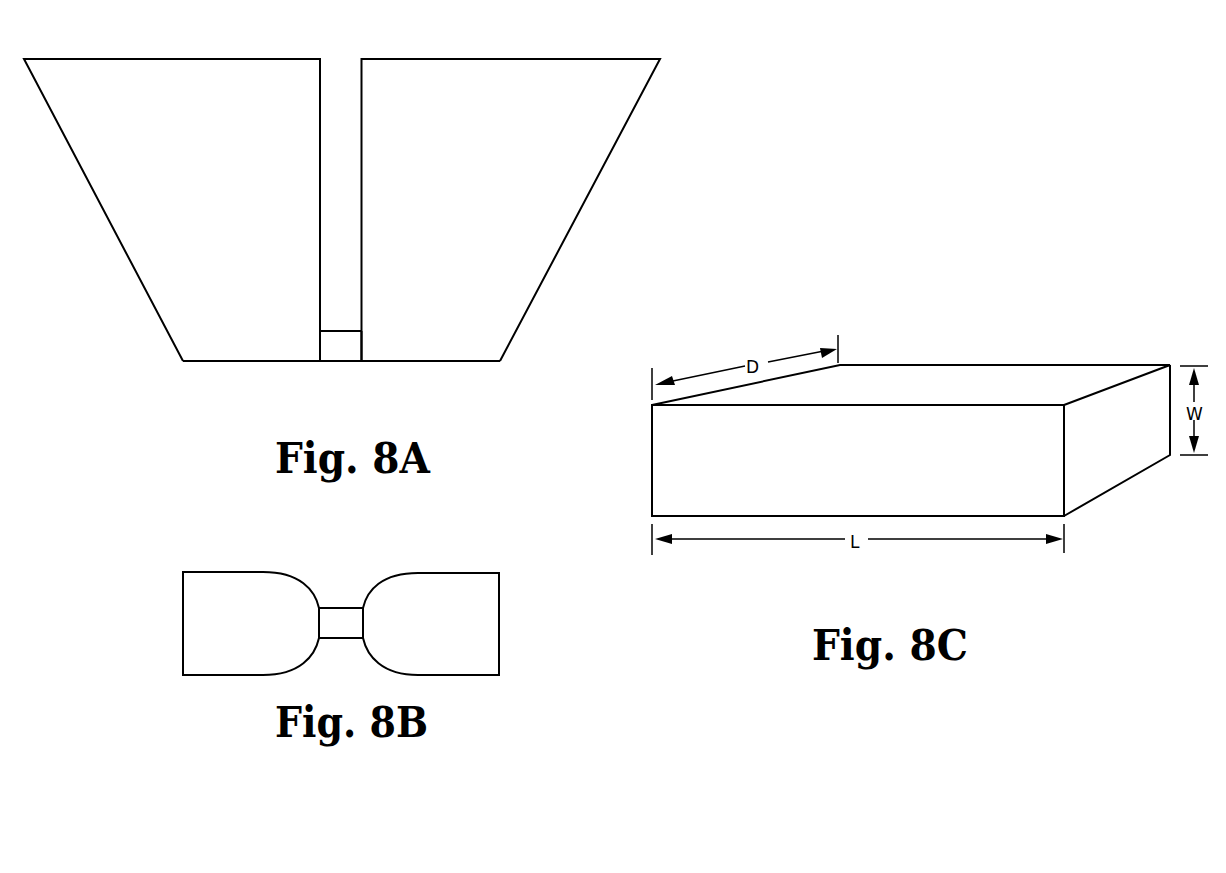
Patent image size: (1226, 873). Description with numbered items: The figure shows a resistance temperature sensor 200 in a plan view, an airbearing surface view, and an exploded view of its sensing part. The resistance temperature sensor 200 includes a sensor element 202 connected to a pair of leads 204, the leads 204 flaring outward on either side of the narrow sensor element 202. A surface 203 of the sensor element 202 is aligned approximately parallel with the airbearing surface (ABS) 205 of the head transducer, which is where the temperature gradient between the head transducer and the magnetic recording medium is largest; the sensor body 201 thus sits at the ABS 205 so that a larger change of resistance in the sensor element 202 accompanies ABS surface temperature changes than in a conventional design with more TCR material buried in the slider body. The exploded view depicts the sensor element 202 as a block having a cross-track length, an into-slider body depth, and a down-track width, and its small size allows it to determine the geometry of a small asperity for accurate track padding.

In FIG. 8A, the resistance temperature sensor 200 is at (698, 42).
In FIG. 8B, the resistance temperature sensor 200 is at (568, 609).
In FIG. 8A, the fuse element body 201 is at (190, 382).
In FIG. 8A, the sensor element 202 is at (328, 363).
In FIG. 8B, the sensor element 202 is at (345, 612).
In FIG. 8C, the sensor element 202 is at (962, 377).
In FIG. 8A, the surface of the sensor element 203 is at (340, 362).
In FIG. 8A, the leads 204 is at (143, 227).
In FIG. 8B, the leads 204 is at (194, 620).
In FIG. 8A, the airbearing surface 205 is at (262, 363).